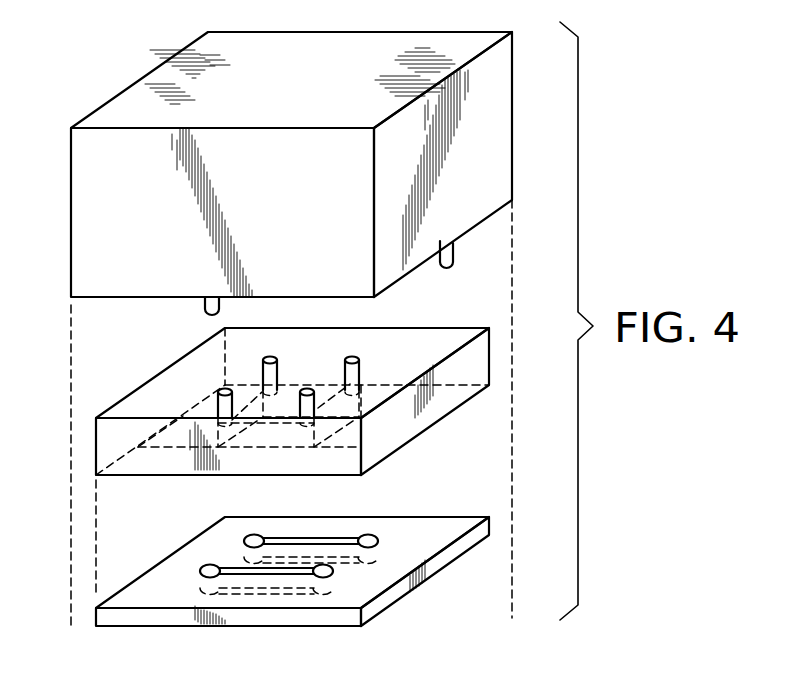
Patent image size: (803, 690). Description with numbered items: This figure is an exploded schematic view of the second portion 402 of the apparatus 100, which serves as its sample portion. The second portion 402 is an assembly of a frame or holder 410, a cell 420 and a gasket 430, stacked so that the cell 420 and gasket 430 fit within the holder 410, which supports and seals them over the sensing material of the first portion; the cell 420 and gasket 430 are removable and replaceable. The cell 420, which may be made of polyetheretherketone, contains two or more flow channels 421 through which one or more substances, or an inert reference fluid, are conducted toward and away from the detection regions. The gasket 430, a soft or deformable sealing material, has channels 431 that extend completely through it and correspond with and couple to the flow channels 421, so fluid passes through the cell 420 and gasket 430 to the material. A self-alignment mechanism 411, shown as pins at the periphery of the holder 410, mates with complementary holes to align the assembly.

The apparatus 100 is at (62, 537).
The second portion 402 is at (485, 631).
The holder 410 is at (480, 134).
The self-alignment mechanism 411 is at (441, 240).
The cell 420 is at (484, 366).
The flow channels 421 is at (308, 386).
The gasket 430 is at (475, 540).
The channels 431 is at (324, 565).